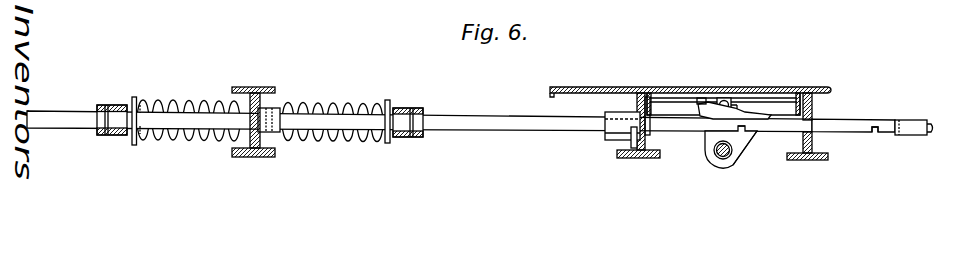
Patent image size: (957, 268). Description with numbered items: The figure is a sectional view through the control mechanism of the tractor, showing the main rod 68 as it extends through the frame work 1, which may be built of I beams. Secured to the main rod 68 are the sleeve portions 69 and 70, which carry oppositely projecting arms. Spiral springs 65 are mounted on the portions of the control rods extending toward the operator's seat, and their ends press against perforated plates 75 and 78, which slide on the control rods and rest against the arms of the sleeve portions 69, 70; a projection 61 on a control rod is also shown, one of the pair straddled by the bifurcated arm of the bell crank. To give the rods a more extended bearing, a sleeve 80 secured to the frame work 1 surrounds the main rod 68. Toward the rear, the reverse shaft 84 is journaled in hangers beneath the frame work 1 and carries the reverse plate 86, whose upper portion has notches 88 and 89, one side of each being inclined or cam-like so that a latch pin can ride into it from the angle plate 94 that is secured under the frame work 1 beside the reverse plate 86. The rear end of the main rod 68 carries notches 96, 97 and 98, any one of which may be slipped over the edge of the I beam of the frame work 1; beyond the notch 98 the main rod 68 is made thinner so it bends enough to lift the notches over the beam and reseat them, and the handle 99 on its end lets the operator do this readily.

The frame work 1 is at (240, 157).
The projection 61 is at (250, 103).
The spiral spring 65 is at (318, 107).
The main rod 68 is at (507, 117).
The sleeve portion 69 is at (419, 110).
The sleeve portion 70 is at (117, 104).
The perforated plate 75 is at (388, 101).
The perforated plate 78 is at (134, 97).
The sleeve 80 is at (607, 135).
The reverse shaft 84 is at (715, 163).
The reverse plate 86 is at (744, 141).
The notch 88 is at (743, 112).
The notch 89 is at (716, 96).
The angle plate 94 is at (781, 104).
The notch 96 is at (853, 134).
The notch 97 is at (820, 131).
The notch 98 is at (748, 133).
The handle 99 is at (920, 120).